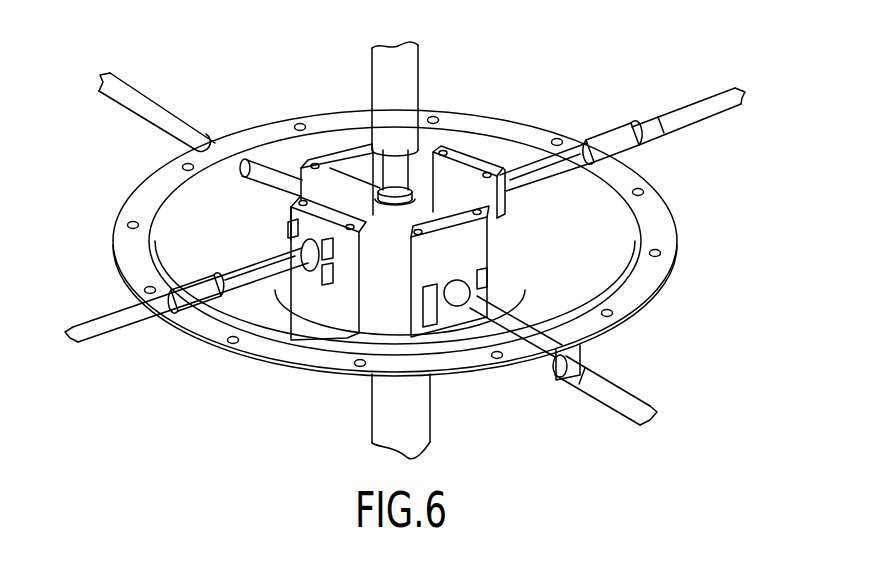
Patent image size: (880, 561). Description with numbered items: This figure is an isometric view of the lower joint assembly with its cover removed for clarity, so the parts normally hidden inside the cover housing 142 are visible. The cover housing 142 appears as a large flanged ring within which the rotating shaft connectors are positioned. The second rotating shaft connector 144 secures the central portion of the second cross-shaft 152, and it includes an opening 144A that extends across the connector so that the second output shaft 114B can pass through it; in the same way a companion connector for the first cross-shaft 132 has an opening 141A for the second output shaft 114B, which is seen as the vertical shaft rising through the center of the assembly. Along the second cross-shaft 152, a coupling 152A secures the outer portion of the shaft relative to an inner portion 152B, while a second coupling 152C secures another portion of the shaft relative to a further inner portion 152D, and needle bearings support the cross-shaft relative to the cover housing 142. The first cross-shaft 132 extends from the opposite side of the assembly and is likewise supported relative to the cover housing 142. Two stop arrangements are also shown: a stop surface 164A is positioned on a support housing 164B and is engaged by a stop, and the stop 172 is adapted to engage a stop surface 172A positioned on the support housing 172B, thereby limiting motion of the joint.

The second output shaft 114B is at (408, 82).
The first cross-shaft 132 is at (623, 397).
The opening 141A is at (393, 258).
The cover housing 142 is at (665, 230).
The second rotating shaft connector 144 is at (440, 197).
The opening 144A is at (387, 227).
The second cross-shaft 152 is at (678, 118).
The coupling 152A is at (608, 147).
The inner portion 152B is at (543, 170).
The coupling 152C is at (187, 298).
The inner portion 152D is at (257, 267).
The stop surface 164A is at (442, 312).
The support housing 164B is at (473, 253).
The stop 172 is at (292, 290).
The stop surface 172A is at (332, 285).
The support housing 172B is at (293, 212).